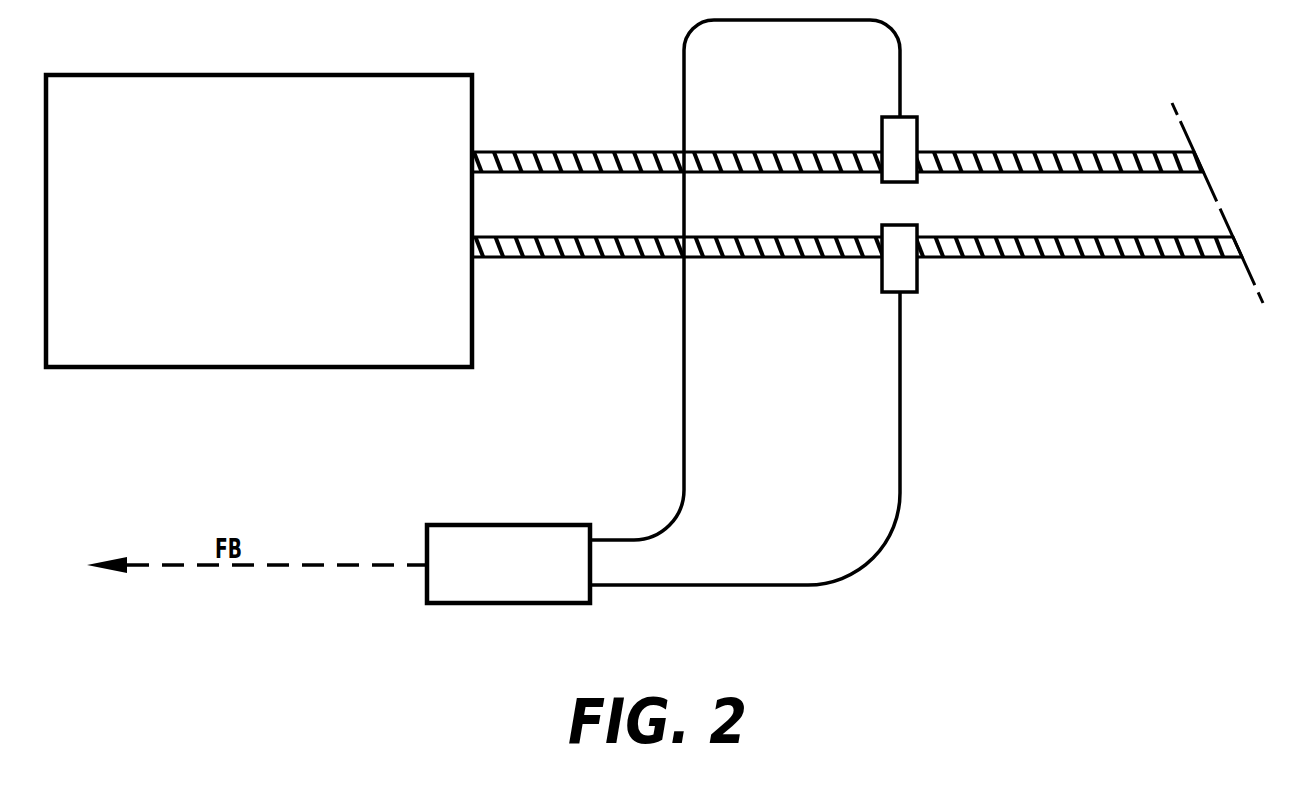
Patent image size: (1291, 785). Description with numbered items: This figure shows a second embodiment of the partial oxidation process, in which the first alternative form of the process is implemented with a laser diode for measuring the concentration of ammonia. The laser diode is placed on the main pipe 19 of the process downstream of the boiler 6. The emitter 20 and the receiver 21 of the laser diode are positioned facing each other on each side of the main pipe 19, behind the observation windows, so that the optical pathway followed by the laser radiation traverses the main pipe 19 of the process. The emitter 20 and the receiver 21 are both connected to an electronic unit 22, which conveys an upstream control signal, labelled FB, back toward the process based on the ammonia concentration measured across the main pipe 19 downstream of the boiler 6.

The boiler 6 is at (248, 223).
The main pipe 19 is at (558, 146).
The emitter 20 is at (921, 112).
The receiver 21 is at (921, 298).
The electronic unit 22 is at (528, 577).